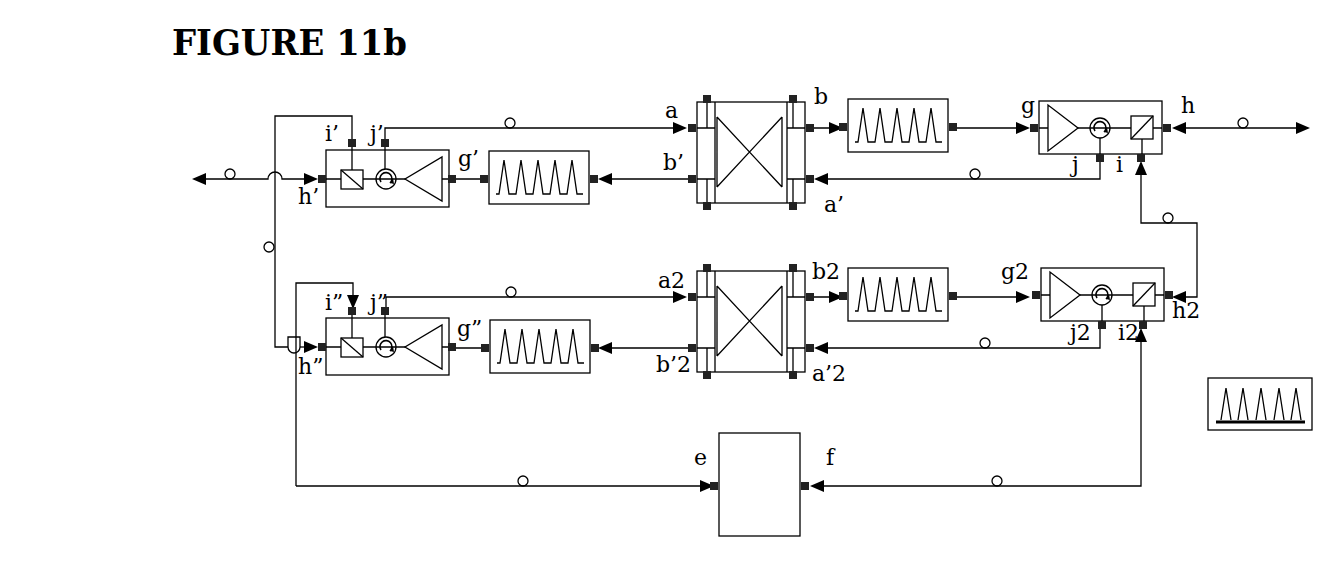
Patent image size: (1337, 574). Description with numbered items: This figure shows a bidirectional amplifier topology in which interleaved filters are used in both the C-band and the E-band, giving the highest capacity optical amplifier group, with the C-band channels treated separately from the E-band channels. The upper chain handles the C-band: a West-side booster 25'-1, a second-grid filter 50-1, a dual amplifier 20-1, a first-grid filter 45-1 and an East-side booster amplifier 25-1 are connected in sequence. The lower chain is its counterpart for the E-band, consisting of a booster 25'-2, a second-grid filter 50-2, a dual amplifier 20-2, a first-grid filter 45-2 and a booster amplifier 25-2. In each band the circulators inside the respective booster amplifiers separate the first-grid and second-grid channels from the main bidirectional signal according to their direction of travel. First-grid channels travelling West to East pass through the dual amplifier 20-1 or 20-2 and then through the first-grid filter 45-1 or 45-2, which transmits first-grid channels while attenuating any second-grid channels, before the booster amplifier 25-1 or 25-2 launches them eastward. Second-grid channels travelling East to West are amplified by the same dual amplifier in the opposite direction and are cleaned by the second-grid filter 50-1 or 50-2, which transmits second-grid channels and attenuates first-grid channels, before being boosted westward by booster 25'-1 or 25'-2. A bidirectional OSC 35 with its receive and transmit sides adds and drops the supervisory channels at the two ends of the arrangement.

The dual amplifier 20-1 is at (733, 102).
The dual amplifier 20-2 is at (733, 271).
The grid-1 filter 45-1 is at (886, 99).
The grid-1 filter 45-2 is at (897, 268).
The booster amplifier 25-1 is at (1107, 101).
The booster amplifier 25-2 is at (1062, 268).
The booster 25'-1 is at (411, 200).
The booster 25'-2 is at (411, 382).
The grid-2 filter 50-1 is at (593, 205).
The grid-2 filter 50-2 is at (570, 373).
The bidirectional OSC 35 is at (800, 447).